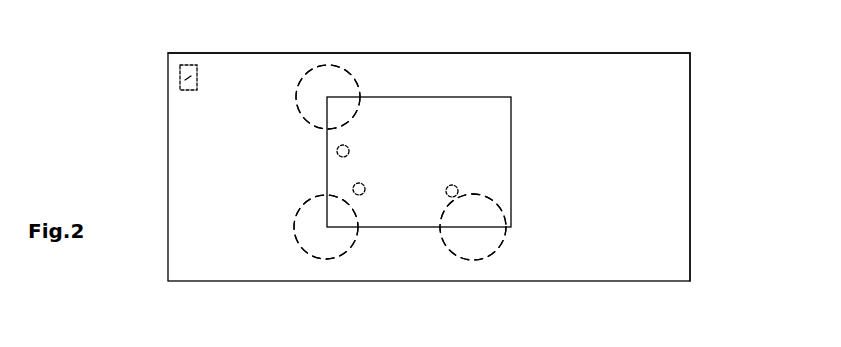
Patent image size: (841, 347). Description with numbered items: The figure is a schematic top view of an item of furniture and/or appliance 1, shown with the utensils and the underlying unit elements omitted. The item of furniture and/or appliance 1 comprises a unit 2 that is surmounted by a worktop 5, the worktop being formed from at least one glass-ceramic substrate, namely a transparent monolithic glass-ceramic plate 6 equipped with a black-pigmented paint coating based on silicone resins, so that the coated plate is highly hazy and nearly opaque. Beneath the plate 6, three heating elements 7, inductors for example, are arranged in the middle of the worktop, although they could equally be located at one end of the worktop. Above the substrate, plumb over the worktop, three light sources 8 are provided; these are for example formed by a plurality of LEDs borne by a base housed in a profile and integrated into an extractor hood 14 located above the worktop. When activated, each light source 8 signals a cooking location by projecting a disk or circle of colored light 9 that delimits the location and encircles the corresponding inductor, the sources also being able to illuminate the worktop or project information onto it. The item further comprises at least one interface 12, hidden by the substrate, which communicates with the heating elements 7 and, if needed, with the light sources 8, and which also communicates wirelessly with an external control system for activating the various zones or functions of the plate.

The item of furniture and/or appliance 1 is at (738, 100).
The unit 2 is at (632, 53).
The worktop 5 is at (467, 67).
The glass-ceramic plate 6 is at (690, 196).
The heating elements 7 is at (297, 88).
The light sources 8 is at (452, 190).
The circle of colored light 9 is at (330, 73).
The interface 12 is at (183, 70).
The extractor hood 14 is at (495, 127).